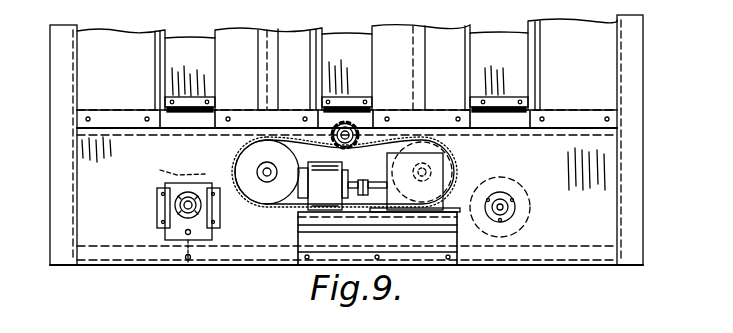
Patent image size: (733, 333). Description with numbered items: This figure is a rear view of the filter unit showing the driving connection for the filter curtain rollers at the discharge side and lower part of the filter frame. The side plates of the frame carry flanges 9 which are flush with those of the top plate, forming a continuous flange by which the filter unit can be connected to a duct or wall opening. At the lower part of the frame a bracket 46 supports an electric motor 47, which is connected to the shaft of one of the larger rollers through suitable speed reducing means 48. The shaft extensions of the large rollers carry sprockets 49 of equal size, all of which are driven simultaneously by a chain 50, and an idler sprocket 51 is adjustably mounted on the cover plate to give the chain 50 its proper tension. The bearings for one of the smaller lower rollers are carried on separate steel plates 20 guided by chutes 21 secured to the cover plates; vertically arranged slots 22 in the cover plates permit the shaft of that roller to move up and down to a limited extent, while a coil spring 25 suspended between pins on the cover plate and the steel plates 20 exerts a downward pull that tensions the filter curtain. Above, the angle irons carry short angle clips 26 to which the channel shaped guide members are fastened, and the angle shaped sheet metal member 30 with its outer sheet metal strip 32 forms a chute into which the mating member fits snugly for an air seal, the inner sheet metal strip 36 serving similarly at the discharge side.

The flange 9 is at (55, 133).
The steel plate 20 is at (165, 234).
The chute 21 is at (157, 202).
The vertically arranged slot 22 is at (193, 196).
The coil spring 25 is at (187, 243).
The angle clip 26 is at (197, 97).
The angle shaped sheet metal member 30 is at (293, 36).
The outer sheet metal strip 32 is at (279, 67).
The inner sheet metal strip 36 is at (170, 163).
The bracket 46 is at (438, 255).
The electric motor 47 is at (322, 186).
The speed reducing means 48 is at (431, 182).
The sprocket 49 is at (266, 188).
The chain 50 is at (241, 150).
The idler sprocket 51 is at (353, 124).